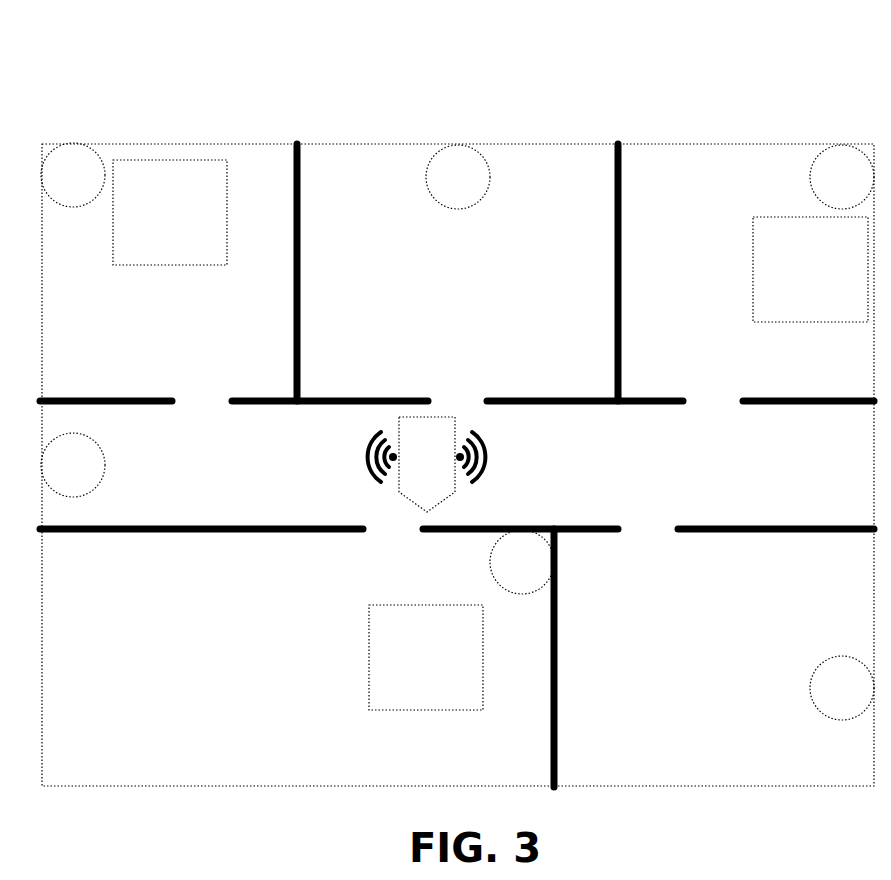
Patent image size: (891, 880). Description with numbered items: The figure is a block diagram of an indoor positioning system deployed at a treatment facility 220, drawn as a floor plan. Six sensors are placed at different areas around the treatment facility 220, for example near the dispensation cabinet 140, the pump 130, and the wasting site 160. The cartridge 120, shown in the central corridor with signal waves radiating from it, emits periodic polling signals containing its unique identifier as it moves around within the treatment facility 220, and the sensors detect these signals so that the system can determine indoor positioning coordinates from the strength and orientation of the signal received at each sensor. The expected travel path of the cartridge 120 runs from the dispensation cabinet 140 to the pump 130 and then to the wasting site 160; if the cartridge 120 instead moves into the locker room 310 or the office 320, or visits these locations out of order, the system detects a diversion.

The treatment facility 220 is at (714, 106).
The dispensation cabinet 140 is at (156, 242).
The locker room 310 is at (475, 296).
The wasting site 160 is at (796, 299).
The cartridge 120 is at (450, 443).
The pump 130 is at (412, 677).
The office 320 is at (697, 681).